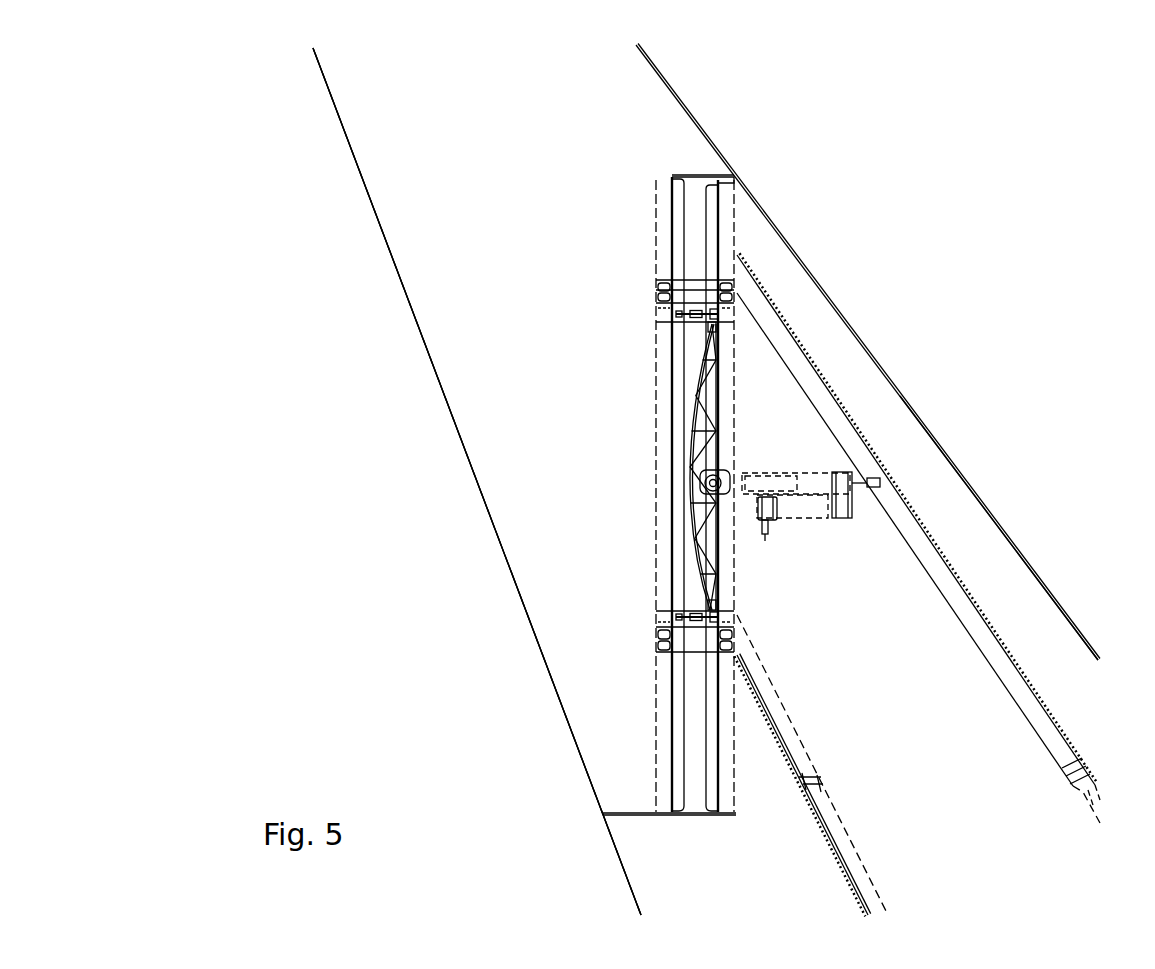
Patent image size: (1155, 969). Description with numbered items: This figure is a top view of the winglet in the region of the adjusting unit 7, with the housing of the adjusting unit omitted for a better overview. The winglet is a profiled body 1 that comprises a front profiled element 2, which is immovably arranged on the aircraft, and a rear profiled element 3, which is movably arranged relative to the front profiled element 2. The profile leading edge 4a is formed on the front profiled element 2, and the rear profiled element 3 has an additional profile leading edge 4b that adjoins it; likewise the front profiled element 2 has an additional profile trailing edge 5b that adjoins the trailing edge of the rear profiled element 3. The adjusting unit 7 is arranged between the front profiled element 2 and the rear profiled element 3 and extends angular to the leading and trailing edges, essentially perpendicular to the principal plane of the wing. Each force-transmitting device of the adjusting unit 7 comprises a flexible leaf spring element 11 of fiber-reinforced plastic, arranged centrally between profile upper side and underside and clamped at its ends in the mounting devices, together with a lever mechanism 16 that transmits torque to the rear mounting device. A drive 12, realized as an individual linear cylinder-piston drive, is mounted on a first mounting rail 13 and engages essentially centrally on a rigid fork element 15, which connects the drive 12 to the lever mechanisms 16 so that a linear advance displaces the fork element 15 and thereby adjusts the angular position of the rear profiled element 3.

The profiled body 1 is at (290, 127).
The front profiled element 2 is at (918, 364).
The rear profiled element 3 is at (368, 300).
The profile leading edge 4a is at (968, 490).
The additional profile leading edge 4b is at (680, 100).
The additional profile trailing edge 5b is at (432, 372).
The adjusting unit 7 is at (728, 228).
The leaf spring element 11 is at (708, 283).
The drive 12 is at (778, 480).
The first mounting rail 13 is at (968, 613).
The fork element 15 is at (704, 421).
The lever mechanism 16 is at (676, 312).